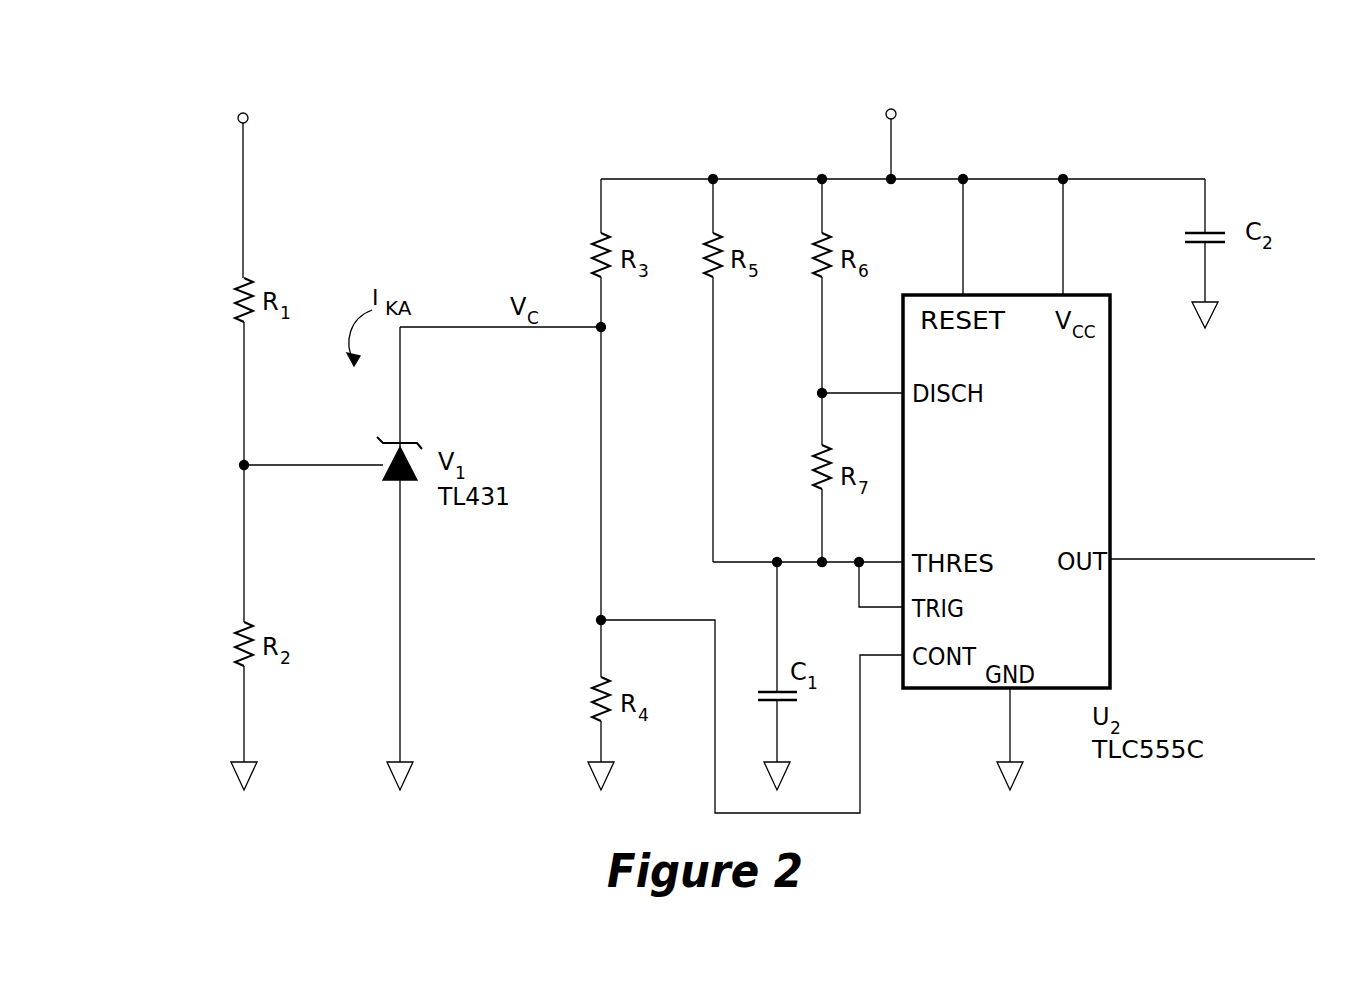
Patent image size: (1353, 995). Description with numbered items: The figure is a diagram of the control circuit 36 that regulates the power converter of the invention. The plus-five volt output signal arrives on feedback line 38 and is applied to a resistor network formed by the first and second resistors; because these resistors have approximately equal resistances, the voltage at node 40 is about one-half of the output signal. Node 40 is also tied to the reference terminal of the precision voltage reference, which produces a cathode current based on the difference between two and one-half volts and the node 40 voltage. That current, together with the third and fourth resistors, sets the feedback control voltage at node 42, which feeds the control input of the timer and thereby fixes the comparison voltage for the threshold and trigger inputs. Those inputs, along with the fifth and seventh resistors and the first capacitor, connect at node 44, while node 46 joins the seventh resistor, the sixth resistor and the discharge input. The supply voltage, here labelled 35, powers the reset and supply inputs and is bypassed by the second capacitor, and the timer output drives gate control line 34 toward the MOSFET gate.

The gate control line 34 is at (1222, 559).
The Vcc supply terminal 35 is at (891, 150).
The control circuit 36 is at (320, 836).
The feedback line 38 is at (243, 152).
The node 40 is at (244, 466).
The node 42 is at (600, 330).
The node 44 is at (713, 442).
The node 46 is at (824, 392).